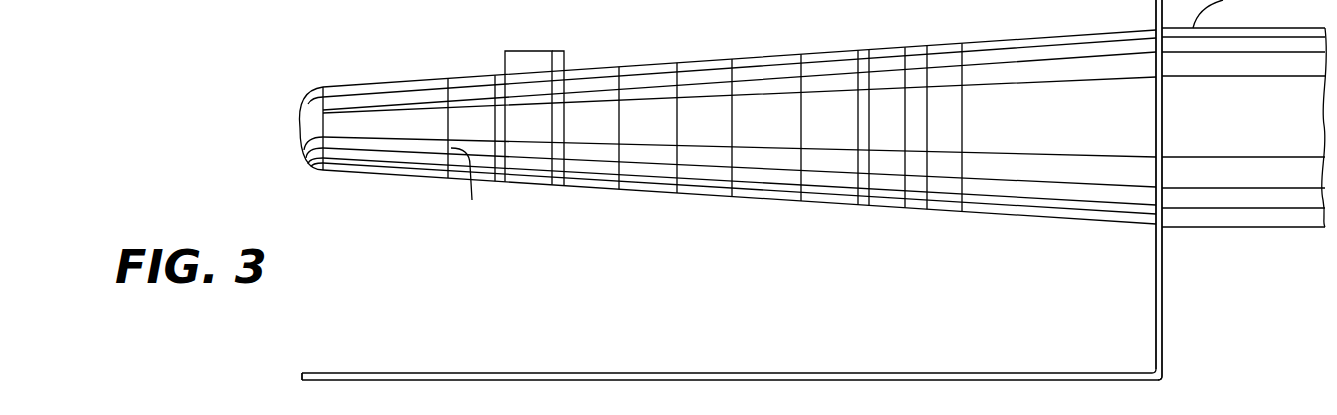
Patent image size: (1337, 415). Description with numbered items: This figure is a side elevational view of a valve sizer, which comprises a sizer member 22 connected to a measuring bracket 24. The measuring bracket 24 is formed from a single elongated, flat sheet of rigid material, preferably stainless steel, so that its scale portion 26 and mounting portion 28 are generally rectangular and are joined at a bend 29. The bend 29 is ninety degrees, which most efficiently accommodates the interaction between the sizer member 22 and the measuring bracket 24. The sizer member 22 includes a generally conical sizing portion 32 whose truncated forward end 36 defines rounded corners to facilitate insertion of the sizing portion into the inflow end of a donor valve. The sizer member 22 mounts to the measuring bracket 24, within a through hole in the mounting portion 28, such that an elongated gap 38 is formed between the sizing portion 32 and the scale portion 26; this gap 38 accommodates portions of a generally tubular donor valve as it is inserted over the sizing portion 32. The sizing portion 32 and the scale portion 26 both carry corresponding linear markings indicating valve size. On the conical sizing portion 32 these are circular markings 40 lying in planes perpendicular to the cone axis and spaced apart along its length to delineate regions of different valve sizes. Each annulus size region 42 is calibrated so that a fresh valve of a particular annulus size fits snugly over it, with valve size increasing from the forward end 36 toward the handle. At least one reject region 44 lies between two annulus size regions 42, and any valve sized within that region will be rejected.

The sizer member 22 is at (353, 79).
The measuring bracket 24 is at (307, 375).
The scale portion 26 is at (915, 373).
The mounting portion 28 is at (1163, 318).
The bend 29 is at (1163, 380).
The conical sizing portion 32 is at (713, 59).
The truncated forward end 36 is at (300, 132).
The elongated gap 38 is at (448, 258).
The circular markings 40 is at (474, 193).
The annulus size region 42 is at (530, 46).
The reject region 44 is at (558, 46).